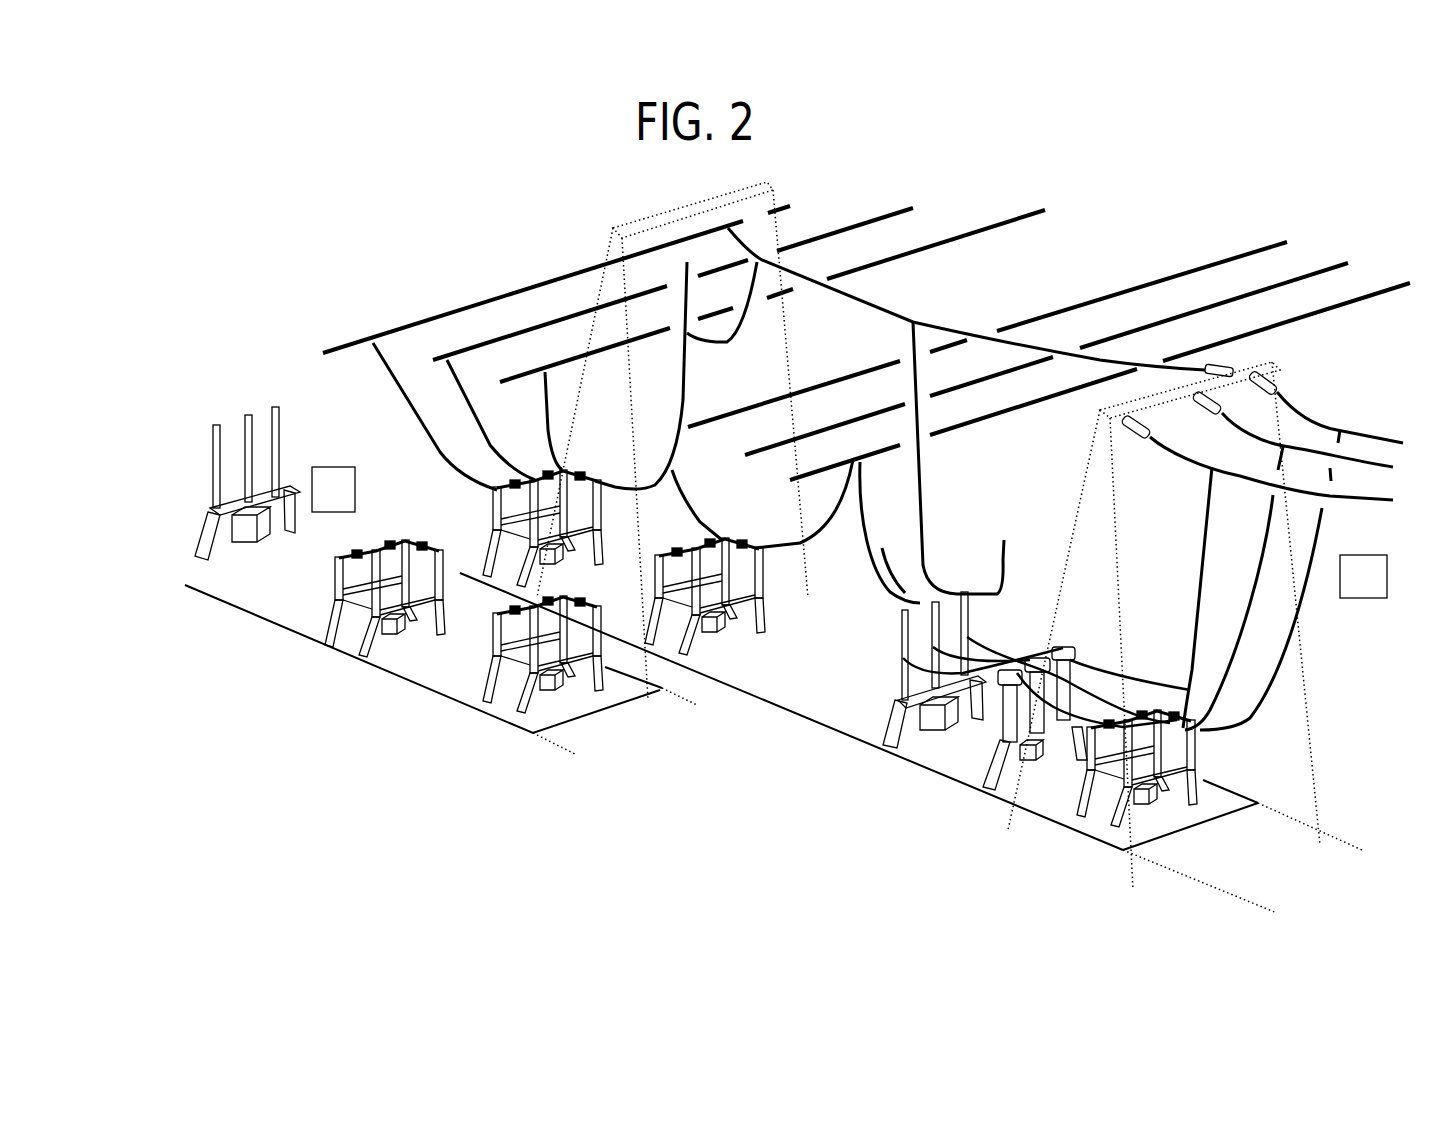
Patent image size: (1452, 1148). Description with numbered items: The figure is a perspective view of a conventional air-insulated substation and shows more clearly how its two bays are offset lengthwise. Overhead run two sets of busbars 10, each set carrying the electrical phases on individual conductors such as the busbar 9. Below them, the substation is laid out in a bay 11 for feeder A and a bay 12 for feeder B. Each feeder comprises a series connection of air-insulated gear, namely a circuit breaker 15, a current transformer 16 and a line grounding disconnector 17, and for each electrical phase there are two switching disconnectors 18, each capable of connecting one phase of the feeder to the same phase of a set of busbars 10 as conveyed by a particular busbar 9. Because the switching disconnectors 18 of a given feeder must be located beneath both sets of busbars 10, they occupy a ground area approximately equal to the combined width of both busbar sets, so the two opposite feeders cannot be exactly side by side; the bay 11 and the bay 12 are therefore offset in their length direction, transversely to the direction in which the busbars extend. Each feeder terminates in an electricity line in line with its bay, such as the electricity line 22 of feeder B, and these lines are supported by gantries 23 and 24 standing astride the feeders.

The busbar 9 is at (1228, 248).
The set of busbars 10 is at (1048, 196).
The bay 11 is at (653, 737).
The bay 12 is at (1237, 847).
The circuit breaker 15 is at (250, 458).
The current transformer 16 is at (1072, 664).
The line grounding disconnector 17 is at (1177, 723).
The switching disconnector 18 is at (335, 551).
The electricity line 22 is at (1330, 390).
The gantry 23 is at (615, 233).
The gantry 24 is at (1105, 475).